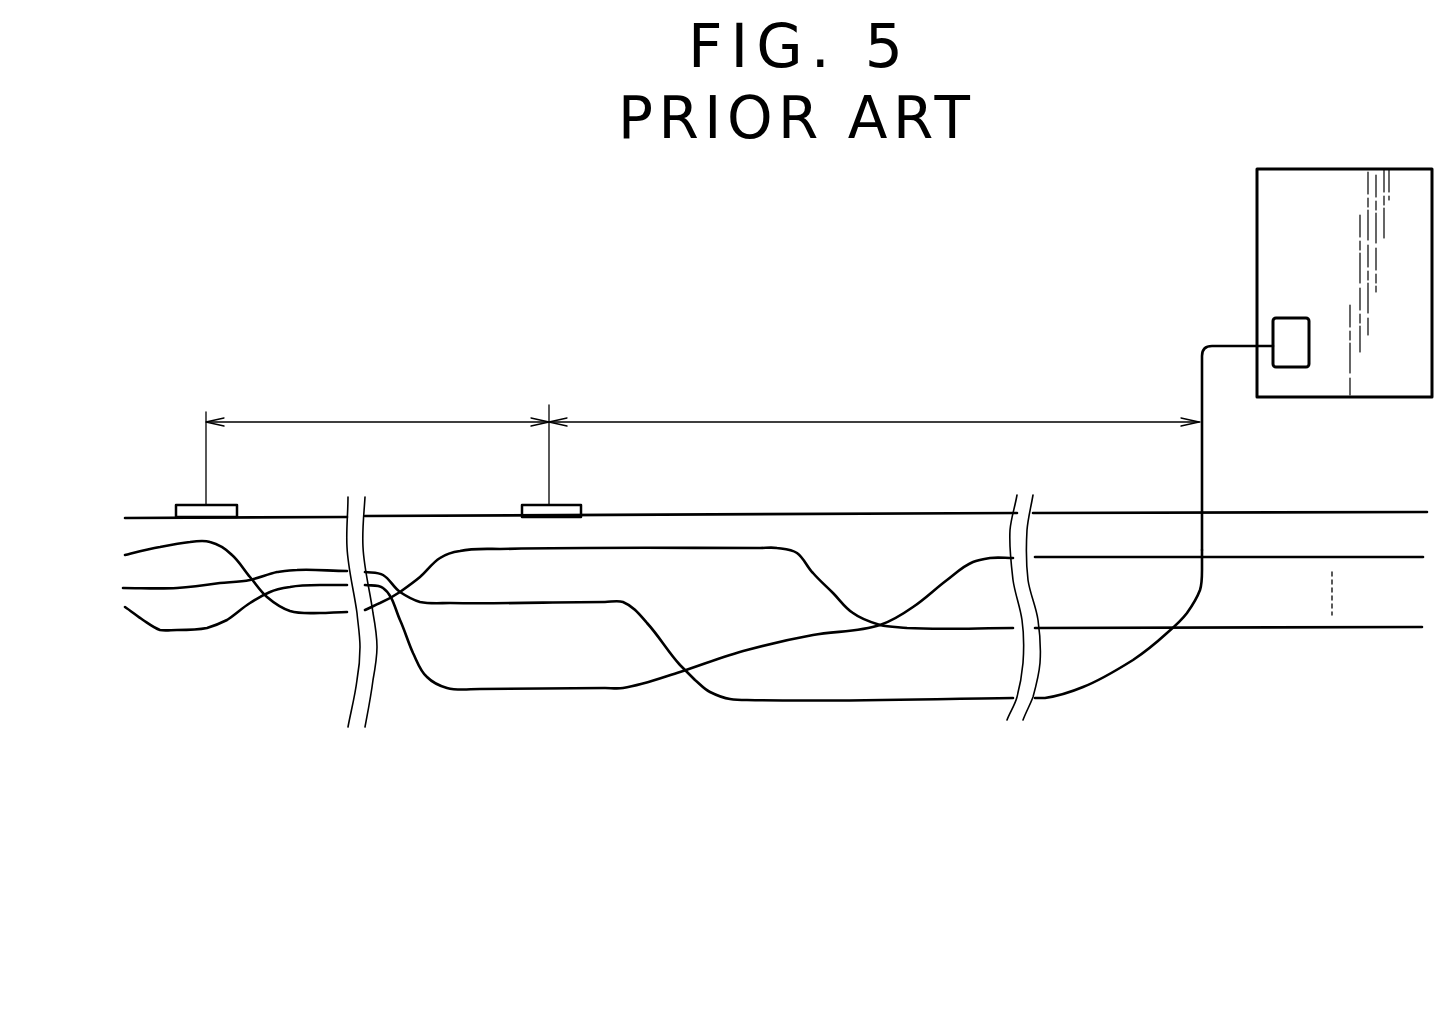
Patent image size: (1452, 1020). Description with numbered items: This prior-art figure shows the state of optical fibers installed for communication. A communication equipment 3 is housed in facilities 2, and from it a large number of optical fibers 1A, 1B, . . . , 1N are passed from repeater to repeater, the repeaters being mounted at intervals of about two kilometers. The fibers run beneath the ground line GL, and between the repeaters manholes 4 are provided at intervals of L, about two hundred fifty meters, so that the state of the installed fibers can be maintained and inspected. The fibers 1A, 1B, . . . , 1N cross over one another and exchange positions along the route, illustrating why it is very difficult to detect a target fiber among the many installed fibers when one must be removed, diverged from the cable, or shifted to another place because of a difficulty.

The facilities 2 is at (1346, 178).
The communication equipment 3 is at (1268, 322).
The manhole 4 is at (226, 504).
The optical fiber 1A is at (1373, 557).
The optical fiber 1B is at (1203, 590).
The optical fiber 1N is at (1373, 627).
The ground line GL is at (1343, 512).
The interval L is at (703, 443).